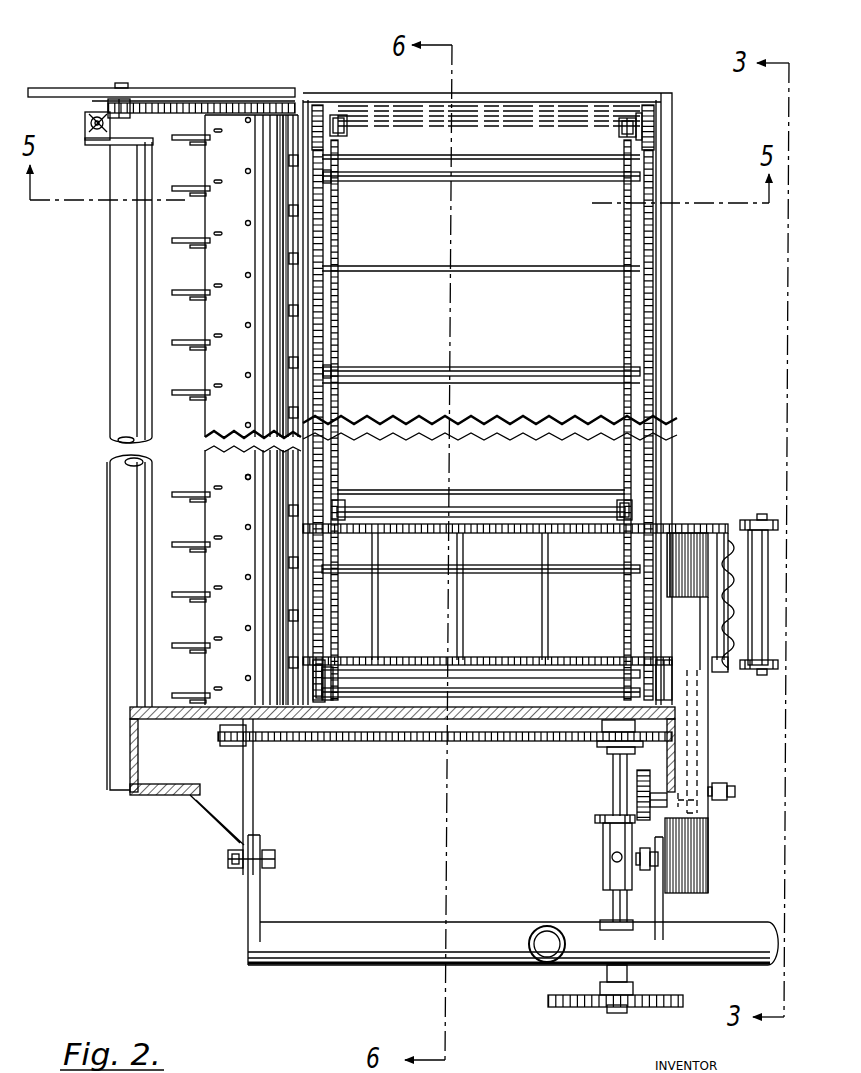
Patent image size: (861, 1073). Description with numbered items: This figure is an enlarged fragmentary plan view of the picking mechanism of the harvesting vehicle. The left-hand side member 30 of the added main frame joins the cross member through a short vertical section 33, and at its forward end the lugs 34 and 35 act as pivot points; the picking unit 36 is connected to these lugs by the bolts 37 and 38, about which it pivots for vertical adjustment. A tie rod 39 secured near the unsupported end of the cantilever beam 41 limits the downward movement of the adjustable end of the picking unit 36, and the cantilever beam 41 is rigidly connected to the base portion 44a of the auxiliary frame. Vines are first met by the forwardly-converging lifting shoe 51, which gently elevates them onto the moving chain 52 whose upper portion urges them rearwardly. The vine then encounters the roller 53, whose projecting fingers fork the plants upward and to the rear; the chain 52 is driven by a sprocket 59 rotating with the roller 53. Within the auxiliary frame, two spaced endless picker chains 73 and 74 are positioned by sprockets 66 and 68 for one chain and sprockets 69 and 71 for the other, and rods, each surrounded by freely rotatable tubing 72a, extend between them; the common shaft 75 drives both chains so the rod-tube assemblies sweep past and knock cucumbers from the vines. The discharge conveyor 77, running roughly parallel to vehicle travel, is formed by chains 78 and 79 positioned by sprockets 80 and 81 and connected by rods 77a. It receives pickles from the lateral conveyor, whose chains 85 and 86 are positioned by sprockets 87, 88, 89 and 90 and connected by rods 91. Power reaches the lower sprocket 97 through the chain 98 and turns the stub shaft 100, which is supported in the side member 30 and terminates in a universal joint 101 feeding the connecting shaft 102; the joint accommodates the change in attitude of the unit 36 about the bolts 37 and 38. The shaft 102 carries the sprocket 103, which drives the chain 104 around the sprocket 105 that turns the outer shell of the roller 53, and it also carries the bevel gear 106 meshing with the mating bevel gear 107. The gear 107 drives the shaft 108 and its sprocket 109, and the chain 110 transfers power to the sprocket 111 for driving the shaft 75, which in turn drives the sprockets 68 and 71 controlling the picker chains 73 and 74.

The side member 30 is at (355, 966).
The short vertical section 33 is at (542, 926).
The lug 34 is at (250, 898).
The lug 35 is at (664, 913).
The picking unit 36 is at (592, 337).
The bolt 37 is at (275, 858).
The bolt 38 is at (658, 858).
The tie rod 39 is at (85, 120).
The cantilever beam 41 is at (113, 512).
The base portion of the auxiliary frame 44a is at (168, 795).
The lifting shoe 51 is at (62, 90).
The lifting chain 52 is at (170, 103).
The roller 53 is at (278, 246).
The sprocket 59 is at (218, 103).
The sprocket 66 is at (322, 112).
The sprocket 68 is at (320, 660).
The sprocket 69 is at (648, 112).
The sprocket 71 is at (656, 672).
The tubing 72a is at (478, 370).
The picker chain 73 is at (652, 285).
The picker chain 74 is at (319, 324).
The common shaft 75 is at (413, 682).
The discharge conveyor 77 is at (545, 608).
The rod 77a is at (481, 608).
The chain 78 is at (698, 524).
The chain 79 is at (722, 672).
The sprocket 80 is at (768, 520).
The sprocket 81 is at (768, 672).
The chain 85 is at (624, 294).
The chain 86 is at (336, 357).
The sprocket 87 is at (358, 495).
The sprocket 88 is at (342, 125).
The sprocket 89 is at (618, 505).
The sprocket 90 is at (626, 125).
The rod 91 is at (500, 380).
The lower sprocket 97 is at (583, 1007).
The chain 98 is at (556, 996).
The stub shaft 100 is at (612, 903).
The universal joint 101 is at (604, 866).
The connecting shaft 102 is at (612, 775).
The sprocket 103 is at (598, 741).
The chain 104 is at (492, 740).
The sprocket 105 is at (254, 745).
The bevel gear 106 is at (596, 822).
The bevel gear 107 is at (638, 790).
The shaft 108 is at (730, 797).
The sprocket 109 is at (708, 780).
The chain 110 is at (697, 760).
The sprocket 111 is at (708, 705).